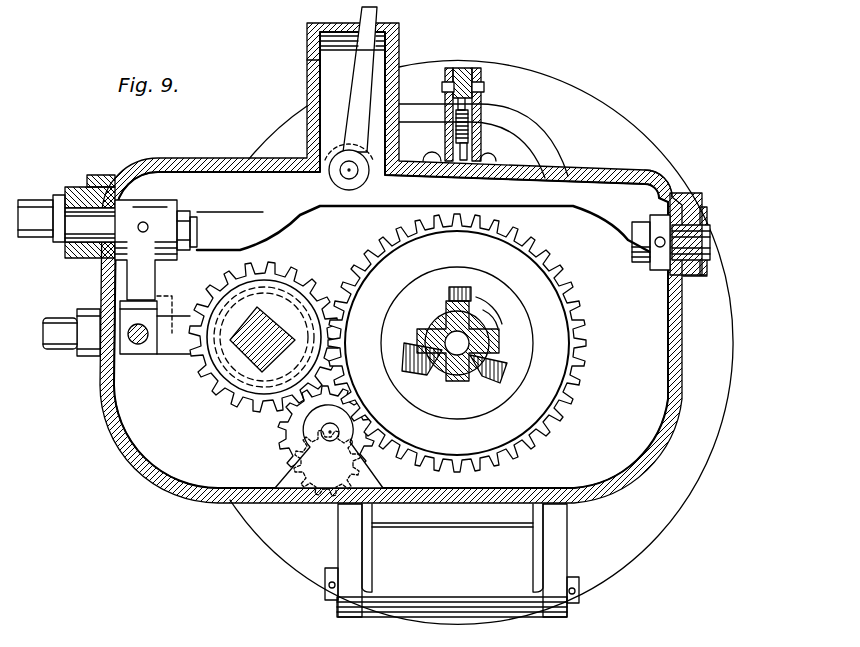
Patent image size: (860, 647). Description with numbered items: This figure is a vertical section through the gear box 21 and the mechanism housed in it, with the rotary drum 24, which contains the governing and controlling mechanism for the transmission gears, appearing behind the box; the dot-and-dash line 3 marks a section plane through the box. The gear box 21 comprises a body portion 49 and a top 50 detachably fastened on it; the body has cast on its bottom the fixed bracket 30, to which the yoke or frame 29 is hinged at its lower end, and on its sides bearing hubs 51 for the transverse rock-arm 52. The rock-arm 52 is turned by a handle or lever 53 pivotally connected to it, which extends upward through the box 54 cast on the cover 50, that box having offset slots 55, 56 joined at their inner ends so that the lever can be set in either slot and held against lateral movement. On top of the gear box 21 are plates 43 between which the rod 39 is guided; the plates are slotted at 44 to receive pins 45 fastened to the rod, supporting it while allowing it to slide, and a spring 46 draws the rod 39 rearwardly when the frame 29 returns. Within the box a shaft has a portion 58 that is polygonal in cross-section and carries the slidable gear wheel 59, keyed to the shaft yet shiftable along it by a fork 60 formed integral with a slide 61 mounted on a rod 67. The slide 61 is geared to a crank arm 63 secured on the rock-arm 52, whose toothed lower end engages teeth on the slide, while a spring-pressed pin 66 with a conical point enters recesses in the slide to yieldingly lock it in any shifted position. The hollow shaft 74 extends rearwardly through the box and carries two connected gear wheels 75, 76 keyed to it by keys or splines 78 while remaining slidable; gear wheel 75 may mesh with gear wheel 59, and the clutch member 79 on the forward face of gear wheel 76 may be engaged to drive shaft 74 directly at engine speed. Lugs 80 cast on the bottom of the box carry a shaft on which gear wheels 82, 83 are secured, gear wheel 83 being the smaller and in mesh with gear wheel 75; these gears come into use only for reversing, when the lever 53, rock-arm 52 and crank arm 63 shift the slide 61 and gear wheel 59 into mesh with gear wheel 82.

The shaft 3 is at (92, 292).
The gear box 21 is at (624, 484).
The rotary drum 24 is at (674, 520).
The yoke or frame 29 is at (349, 525).
The fixed bracket 30 is at (452, 570).
The rod 39 is at (463, 69).
The plates 43 is at (446, 135).
The slots 44 is at (444, 81).
The pins 45 is at (485, 88).
The spring 46 is at (470, 149).
The body portion 49 is at (669, 291).
The top 50 is at (668, 182).
The bearing hubs 51 is at (106, 262).
The rock-arm 52 is at (330, 184).
The handle or lever 53 is at (356, 114).
The box 54 is at (345, 34).
The slot 55 is at (307, 60).
The slot 56 is at (345, 48).
The polygonal portion of shaft 58 is at (275, 325).
The slidable gear wheel 59 is at (280, 277).
The fork 60 is at (173, 350).
The slide 61 is at (133, 350).
The crank arm 63 is at (148, 277).
The spring-pressed pin 66 is at (100, 359).
The rod 67 is at (143, 356).
The shaft 74 is at (438, 374).
The gear wheel 75 is at (546, 266).
The gear wheel 76 is at (549, 303).
The keys or splines 78 is at (448, 314).
The clutch member 79 is at (484, 312).
The lugs 80 is at (293, 463).
The gear wheel 82 is at (297, 412).
The gear wheel 83 is at (283, 437).